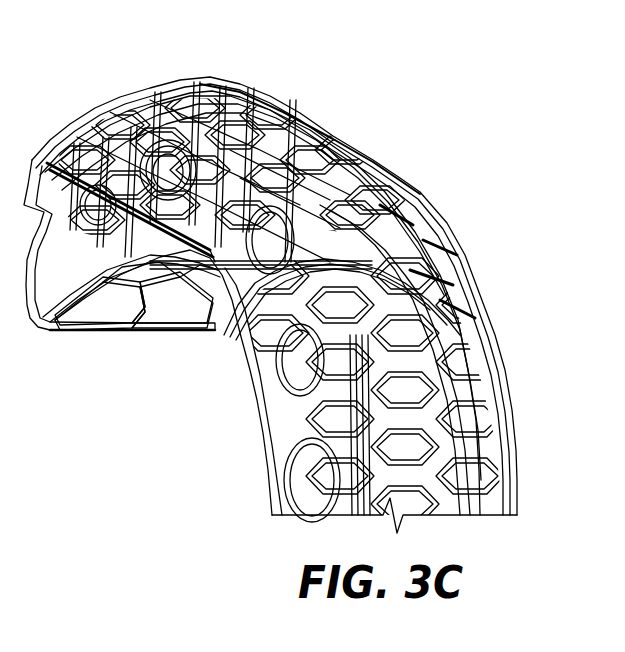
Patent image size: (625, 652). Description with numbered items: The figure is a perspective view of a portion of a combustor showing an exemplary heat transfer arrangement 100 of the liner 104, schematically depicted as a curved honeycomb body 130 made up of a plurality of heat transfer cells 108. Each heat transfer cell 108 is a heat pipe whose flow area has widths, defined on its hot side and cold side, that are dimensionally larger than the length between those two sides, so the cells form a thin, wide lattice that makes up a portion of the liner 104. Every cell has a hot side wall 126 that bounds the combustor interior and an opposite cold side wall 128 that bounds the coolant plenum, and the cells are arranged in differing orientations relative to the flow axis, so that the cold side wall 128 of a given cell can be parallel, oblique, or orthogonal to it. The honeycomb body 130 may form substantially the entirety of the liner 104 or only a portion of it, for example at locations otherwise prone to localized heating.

The heat transfer arrangement 100 is at (116, 504).
The liner 104 is at (445, 220).
The heat transfer cells 108 is at (387, 223).
The hot side wall 126 is at (113, 333).
The cold side wall 128 is at (310, 128).
The honeycomb body 130 is at (369, 118).